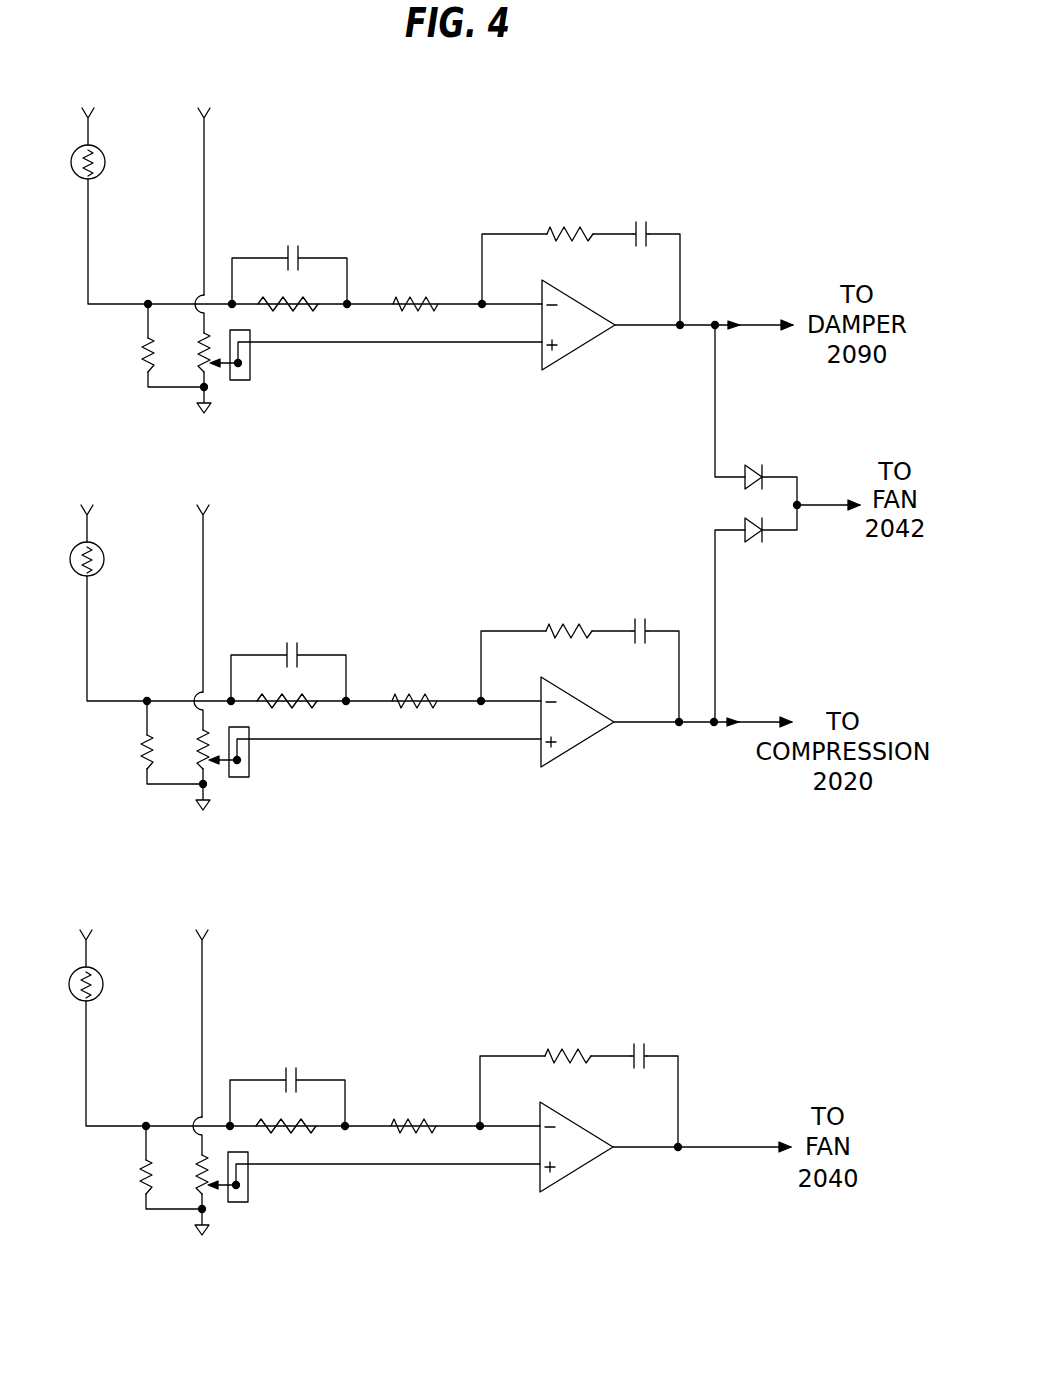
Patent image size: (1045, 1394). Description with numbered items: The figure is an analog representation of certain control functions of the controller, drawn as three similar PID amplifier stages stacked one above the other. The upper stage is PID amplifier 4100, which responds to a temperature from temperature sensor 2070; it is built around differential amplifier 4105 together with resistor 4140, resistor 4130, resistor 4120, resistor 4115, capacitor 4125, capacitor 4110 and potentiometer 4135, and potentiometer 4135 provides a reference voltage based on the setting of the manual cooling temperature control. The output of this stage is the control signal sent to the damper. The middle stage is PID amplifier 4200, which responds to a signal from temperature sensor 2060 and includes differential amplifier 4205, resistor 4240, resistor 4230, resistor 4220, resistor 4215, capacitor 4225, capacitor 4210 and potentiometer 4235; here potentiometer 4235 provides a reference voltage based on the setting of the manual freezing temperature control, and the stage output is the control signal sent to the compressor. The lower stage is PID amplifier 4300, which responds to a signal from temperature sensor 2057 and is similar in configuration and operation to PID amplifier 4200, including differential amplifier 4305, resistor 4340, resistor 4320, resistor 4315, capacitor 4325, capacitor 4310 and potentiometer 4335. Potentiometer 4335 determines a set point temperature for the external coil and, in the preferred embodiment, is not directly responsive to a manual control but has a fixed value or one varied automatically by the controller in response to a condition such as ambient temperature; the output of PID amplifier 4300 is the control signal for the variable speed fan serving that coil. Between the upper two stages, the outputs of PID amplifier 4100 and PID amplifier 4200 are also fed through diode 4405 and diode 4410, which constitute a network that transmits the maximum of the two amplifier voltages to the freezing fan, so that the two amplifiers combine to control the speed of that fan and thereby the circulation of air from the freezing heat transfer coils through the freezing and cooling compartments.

The PID amplifier 4100 is at (434, 146).
The temperature sensor 2070 is at (105, 160).
The resistor 4140 is at (142, 355).
The potentiometer 4135 is at (227, 385).
The resistor 4130 is at (295, 315).
The capacitor 4125 is at (299, 258).
The resistor 4120 is at (412, 293).
The resistor 4115 is at (548, 232).
The capacitor 4110 is at (648, 233).
The differential amplifier 4105 is at (570, 362).
The PID amplifier 4200 is at (427, 658).
The temperature sensor 2060 is at (121, 541).
The resistor 4240 is at (132, 742).
The potentiometer 4235 is at (369, 772).
The resistor 4230 is at (305, 733).
The capacitor 4225 is at (303, 648).
The resistor 4220 is at (425, 672).
The resistor 4215 is at (581, 604).
The capacitor 4210 is at (674, 608).
The differential amplifier 4205 is at (587, 740).
The PID amplifier 4300 is at (426, 1083).
The temperature sensor 2057 is at (120, 966).
The resistor 4340 is at (131, 1167).
The potentiometer 4335 is at (368, 1197).
The capacitor 4325 is at (302, 1073).
The resistor 4320 is at (424, 1097).
The resistor 4315 is at (580, 1029).
The capacitor 4310 is at (673, 1033).
The differential amplifier 4305 is at (586, 1165).
The diode 4405 is at (756, 462).
The diode 4410 is at (756, 545).